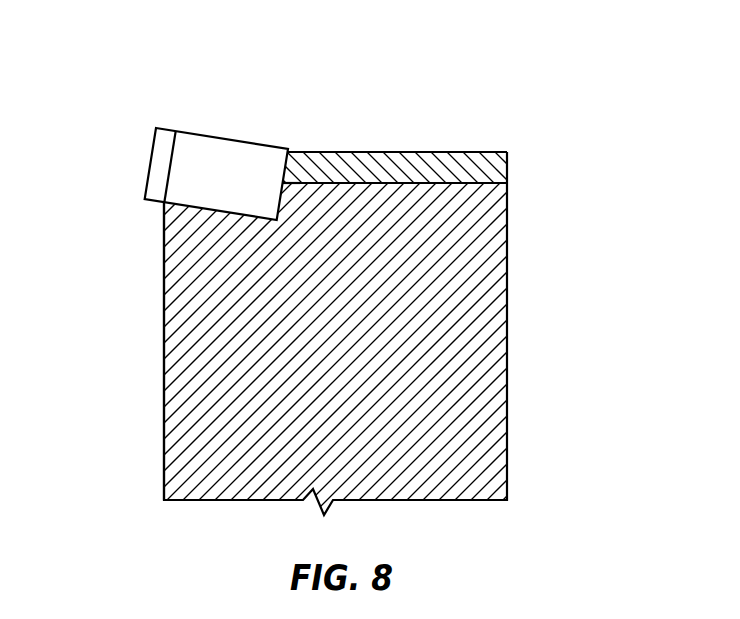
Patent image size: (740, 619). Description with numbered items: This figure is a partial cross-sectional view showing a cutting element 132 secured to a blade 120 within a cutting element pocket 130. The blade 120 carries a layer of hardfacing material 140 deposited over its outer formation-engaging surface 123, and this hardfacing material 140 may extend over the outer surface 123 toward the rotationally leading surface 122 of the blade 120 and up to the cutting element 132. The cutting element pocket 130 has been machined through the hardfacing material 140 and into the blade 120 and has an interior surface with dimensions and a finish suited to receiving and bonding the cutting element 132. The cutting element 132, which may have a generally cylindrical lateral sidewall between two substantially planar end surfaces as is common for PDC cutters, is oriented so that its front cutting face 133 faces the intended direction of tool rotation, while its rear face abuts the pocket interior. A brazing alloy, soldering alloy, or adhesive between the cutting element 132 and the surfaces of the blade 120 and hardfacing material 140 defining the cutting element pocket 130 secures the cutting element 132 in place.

The blade 120 is at (470, 345).
The rotationally leading surface 122 is at (165, 336).
The outer formation-engaging surface 123 is at (393, 182).
The cutting element pocket 130 is at (281, 195).
The cutting element 132 is at (202, 155).
The front cutting face 133 is at (147, 162).
The hardfacing material 140 is at (490, 168).